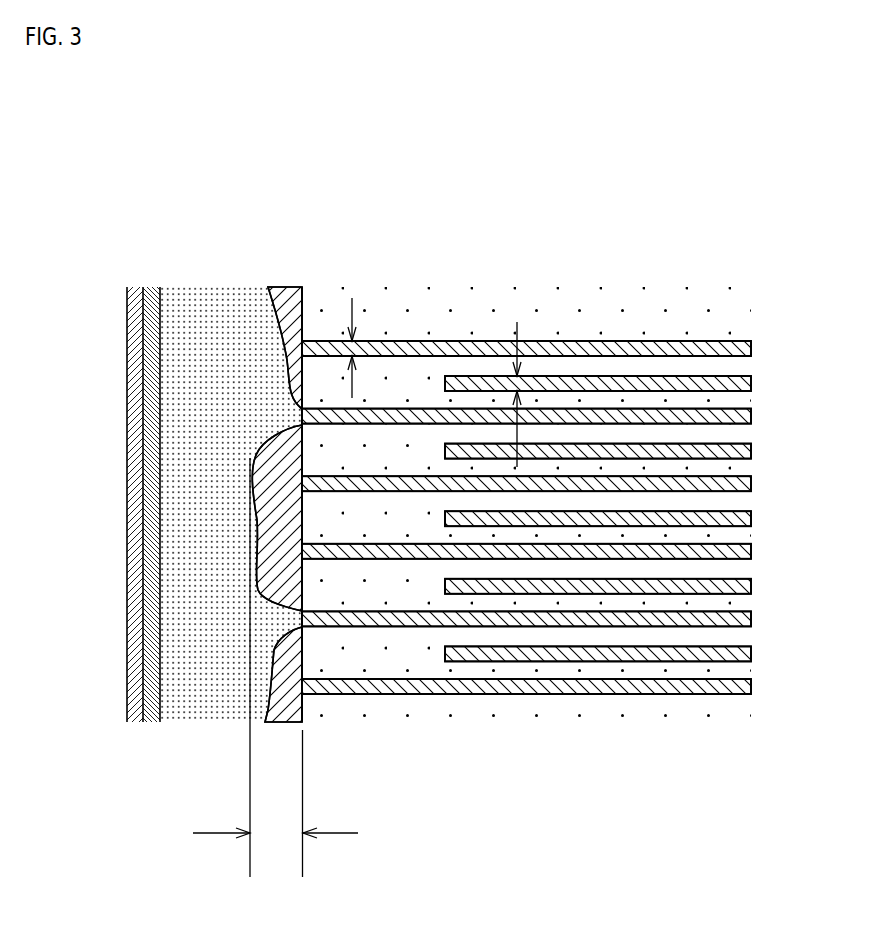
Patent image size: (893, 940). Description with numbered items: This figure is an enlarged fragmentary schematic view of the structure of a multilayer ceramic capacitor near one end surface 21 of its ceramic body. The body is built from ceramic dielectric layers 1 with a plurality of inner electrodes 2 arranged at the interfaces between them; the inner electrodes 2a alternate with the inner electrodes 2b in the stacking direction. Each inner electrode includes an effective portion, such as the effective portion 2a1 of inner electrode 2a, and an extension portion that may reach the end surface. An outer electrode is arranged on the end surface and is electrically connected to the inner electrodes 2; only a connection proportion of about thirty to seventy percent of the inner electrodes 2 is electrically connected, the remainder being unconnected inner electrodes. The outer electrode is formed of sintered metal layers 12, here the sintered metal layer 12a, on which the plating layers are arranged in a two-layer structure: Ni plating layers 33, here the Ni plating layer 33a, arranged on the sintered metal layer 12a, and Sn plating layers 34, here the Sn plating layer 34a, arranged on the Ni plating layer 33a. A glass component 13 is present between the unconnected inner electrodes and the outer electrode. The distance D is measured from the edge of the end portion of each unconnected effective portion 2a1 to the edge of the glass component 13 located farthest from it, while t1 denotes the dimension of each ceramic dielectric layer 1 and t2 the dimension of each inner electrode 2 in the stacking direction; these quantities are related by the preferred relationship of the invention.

The ceramic dielectric layer 1 is at (708, 530).
The inner electrodes 2 is at (538, 438).
The inner electrode 2a is at (650, 409).
The inner electrode 2b is at (733, 458).
The effective portion 2a1 is at (677, 342).
The sintered metal layers 12 is at (164, 504).
The sintered metal layer 12a is at (175, 638).
The glass component 13 is at (262, 492).
The end surface 21 is at (162, 504).
The Ni plating layers 33 is at (100, 532).
The Ni plating layer 33a is at (153, 655).
The Sn plating layers 34 is at (120, 478).
The Sn plating layer 34a is at (135, 373).
The dimension of ceramic dielectric layer t1 is at (520, 398).
The dimension of inner electrode t2 is at (352, 355).
The distance D is at (275, 667).